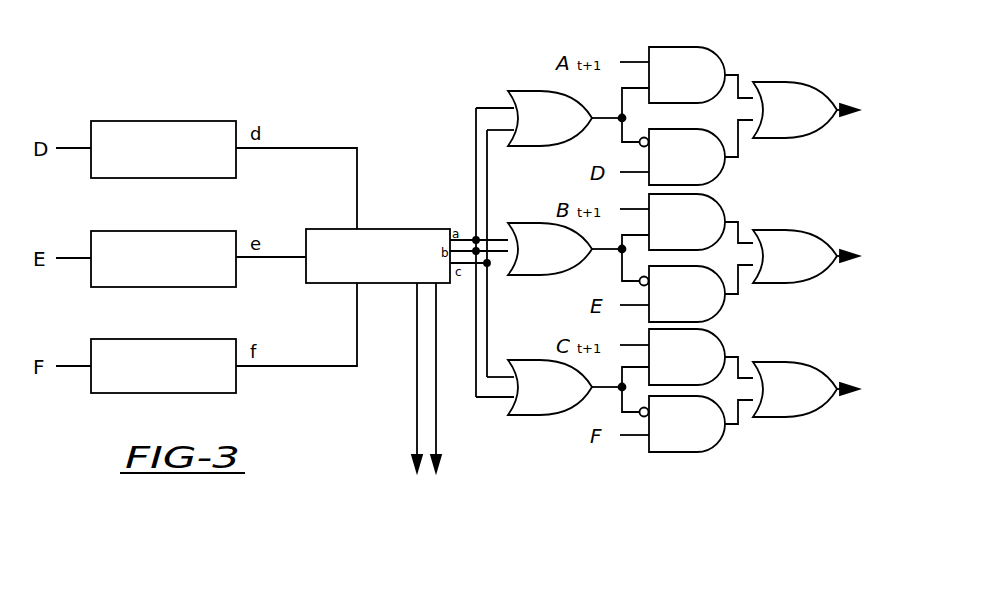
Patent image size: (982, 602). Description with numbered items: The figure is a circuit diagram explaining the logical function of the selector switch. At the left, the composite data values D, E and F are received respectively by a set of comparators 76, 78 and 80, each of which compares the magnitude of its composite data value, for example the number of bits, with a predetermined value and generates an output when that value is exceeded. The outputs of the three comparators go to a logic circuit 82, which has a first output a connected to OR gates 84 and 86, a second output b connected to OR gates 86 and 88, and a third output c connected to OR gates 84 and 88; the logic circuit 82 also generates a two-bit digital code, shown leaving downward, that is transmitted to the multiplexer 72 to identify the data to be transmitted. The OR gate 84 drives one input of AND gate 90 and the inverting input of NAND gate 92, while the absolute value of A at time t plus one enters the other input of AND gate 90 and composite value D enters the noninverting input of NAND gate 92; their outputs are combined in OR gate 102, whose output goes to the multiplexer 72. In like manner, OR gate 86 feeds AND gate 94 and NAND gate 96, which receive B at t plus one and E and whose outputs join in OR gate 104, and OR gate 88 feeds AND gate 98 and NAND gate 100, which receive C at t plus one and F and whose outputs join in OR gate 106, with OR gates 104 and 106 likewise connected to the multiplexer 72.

The multiplexer 72 is at (428, 436).
The comparator 76 is at (201, 121).
The comparator 78 is at (203, 231).
The comparator 80 is at (200, 339).
The logic circuit 82 is at (428, 229).
The OR gate 84 is at (559, 147).
The OR gate 86 is at (559, 276).
The OR gate 88 is at (559, 416).
The AND gate 90 is at (722, 60).
The NAND gate 92 is at (692, 129).
The AND gate 94 is at (719, 205).
The NAND gate 96 is at (720, 278).
The AND gate 98 is at (720, 340).
The NAND gate 100 is at (711, 452).
The OR gate 102 is at (828, 92).
The OR gate 104 is at (826, 238).
The OR gate 106 is at (826, 370).